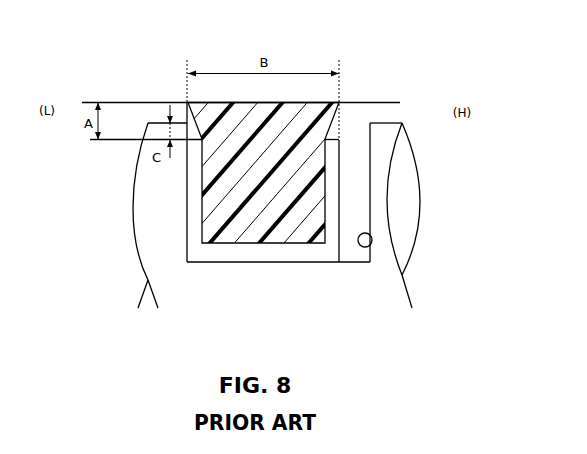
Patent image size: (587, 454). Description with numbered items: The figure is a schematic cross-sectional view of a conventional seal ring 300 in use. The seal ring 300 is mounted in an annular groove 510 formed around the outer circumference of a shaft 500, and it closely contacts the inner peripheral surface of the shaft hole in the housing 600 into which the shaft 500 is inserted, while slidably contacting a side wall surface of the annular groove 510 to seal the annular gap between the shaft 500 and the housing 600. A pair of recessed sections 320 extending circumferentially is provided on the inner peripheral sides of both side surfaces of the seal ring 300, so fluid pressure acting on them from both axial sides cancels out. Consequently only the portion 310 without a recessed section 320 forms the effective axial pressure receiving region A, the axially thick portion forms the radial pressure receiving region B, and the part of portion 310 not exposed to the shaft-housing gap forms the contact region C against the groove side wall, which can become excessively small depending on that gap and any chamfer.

The seal ring 300 is at (358, 139).
The portion where there is no recessed section 310 is at (187, 112).
The recessed section 320 is at (200, 228).
The shaft 500 is at (259, 206).
The annular groove 510 is at (372, 240).
The housing 600 is at (242, 86).